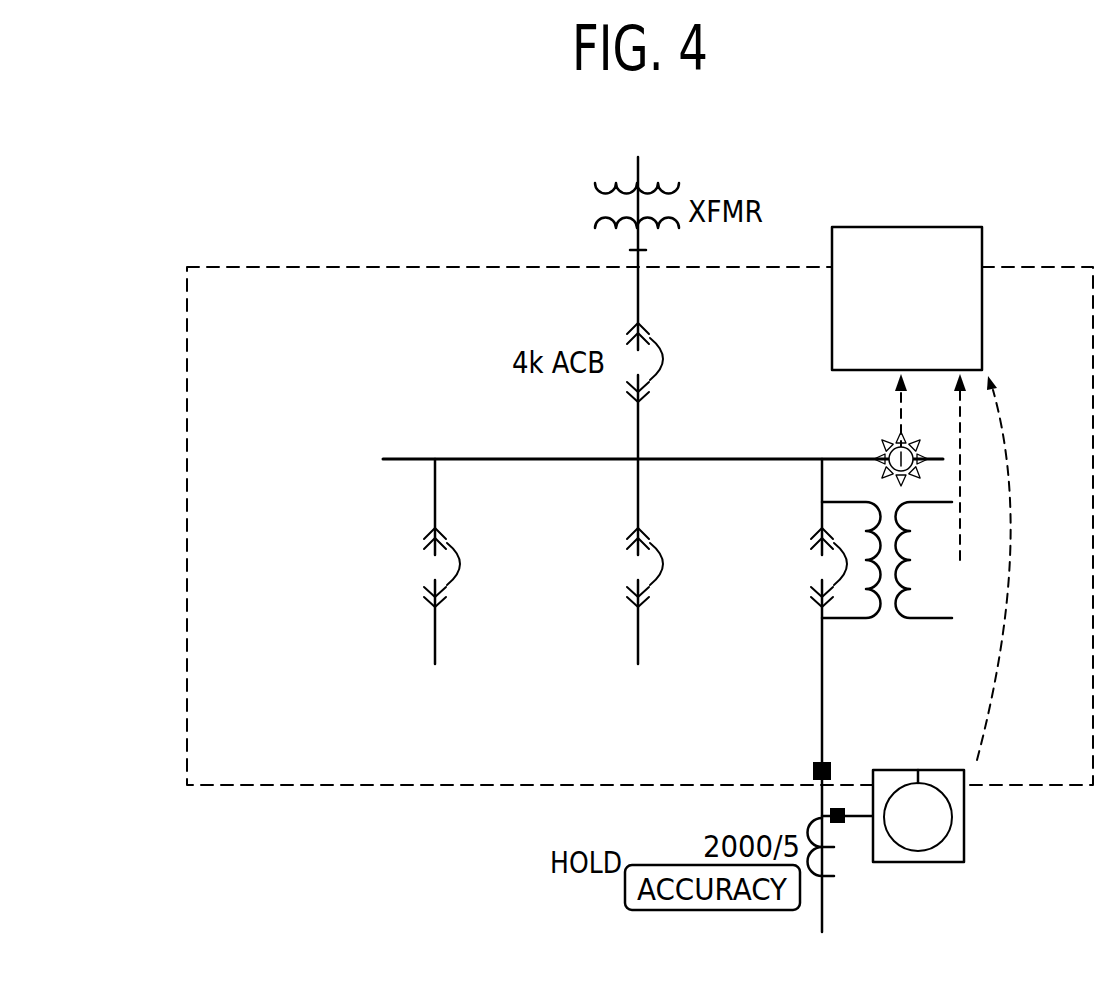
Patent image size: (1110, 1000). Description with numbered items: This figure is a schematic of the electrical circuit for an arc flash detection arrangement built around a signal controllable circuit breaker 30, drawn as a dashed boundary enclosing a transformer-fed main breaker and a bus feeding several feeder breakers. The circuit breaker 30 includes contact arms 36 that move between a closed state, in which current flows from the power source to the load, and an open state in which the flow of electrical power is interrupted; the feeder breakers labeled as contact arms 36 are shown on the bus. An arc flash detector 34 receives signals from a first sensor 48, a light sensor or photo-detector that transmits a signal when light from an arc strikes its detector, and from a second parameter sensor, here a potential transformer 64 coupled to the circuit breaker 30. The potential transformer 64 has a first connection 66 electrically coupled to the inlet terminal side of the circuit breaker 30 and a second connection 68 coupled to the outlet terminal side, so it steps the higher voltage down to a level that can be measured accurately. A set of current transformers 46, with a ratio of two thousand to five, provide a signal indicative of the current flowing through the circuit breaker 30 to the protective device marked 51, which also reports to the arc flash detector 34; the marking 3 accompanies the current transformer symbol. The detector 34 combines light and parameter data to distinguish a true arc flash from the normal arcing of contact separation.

The circuit breaker 30 is at (187, 440).
The arc flash detector 34 is at (900, 227).
The contact arms 36 is at (403, 620).
The current transformers 46 is at (963, 826).
The first sensor 48 is at (885, 445).
The overcurrent relay 51 is at (918, 817).
The potential transformer 64 is at (893, 625).
The first connection 66 is at (853, 562).
The second connection 68 is at (842, 618).
The current transformer rating label 3 is at (848, 876).